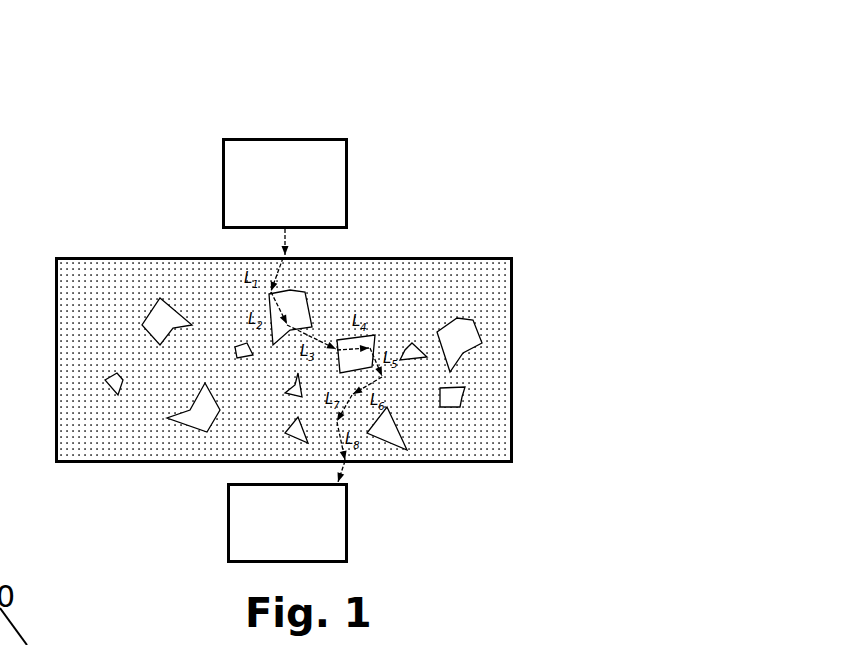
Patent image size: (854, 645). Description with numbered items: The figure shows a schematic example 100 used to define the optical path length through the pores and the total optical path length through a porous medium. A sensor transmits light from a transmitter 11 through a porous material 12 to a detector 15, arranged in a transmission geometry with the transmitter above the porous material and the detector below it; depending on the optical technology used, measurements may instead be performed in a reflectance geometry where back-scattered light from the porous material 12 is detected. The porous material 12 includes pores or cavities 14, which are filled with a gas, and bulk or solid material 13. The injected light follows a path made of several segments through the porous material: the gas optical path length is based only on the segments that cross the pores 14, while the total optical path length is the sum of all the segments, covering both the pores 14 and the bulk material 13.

The schematic example 100 is at (108, 126).
The transmitter 11 is at (349, 161).
The porous material 12 is at (467, 255).
The bulk or solid material 13 is at (479, 292).
The pores or cavities 14 is at (481, 337).
The detector 15 is at (350, 527).